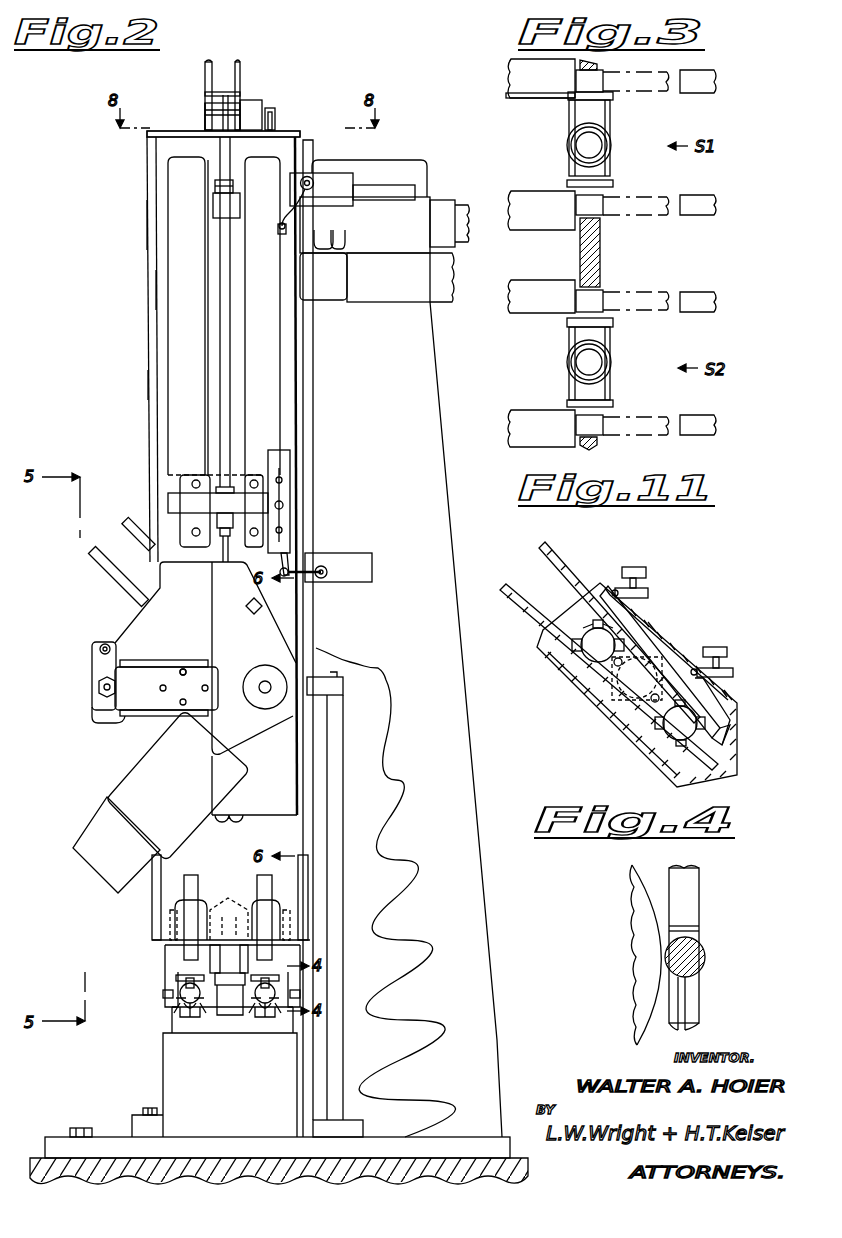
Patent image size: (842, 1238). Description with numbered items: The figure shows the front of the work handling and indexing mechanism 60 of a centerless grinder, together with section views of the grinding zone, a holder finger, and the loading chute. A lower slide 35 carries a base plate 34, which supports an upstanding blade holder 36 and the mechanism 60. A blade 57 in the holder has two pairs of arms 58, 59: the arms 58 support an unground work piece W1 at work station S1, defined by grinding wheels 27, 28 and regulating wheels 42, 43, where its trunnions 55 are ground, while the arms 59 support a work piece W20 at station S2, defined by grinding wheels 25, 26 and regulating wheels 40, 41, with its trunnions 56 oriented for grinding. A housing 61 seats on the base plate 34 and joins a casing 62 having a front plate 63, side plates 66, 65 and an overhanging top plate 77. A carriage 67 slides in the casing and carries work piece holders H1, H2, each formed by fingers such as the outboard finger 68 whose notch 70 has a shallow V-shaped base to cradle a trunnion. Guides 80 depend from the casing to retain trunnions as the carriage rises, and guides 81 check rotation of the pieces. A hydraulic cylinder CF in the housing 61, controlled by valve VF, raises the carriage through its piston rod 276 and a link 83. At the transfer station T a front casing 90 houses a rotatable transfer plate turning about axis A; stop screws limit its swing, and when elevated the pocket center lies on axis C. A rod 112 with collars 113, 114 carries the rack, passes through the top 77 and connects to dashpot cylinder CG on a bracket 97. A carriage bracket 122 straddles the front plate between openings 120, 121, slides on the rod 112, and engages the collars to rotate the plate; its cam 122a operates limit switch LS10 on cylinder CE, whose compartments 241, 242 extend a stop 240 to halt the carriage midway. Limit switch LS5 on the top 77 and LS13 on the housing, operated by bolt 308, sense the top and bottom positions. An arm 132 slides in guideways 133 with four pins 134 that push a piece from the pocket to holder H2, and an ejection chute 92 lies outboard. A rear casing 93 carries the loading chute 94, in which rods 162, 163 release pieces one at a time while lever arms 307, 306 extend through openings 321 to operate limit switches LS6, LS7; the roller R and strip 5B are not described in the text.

In FIG. 2, the work handling mechanism 60 is at (146, 172).
In FIG. 2, the casing 62 is at (146, 222).
In FIG. 2, the front plate 63 is at (163, 289).
In FIG. 2, the side plate 65 is at (303, 412).
In FIG. 2, the side plate 66 is at (149, 386).
In FIG. 2, the carriage 67 is at (185, 476).
In FIG. 2, the top plate 77 is at (290, 136).
In FIG. 2, the bracket 97 is at (206, 110).
In FIG. 2, the dashpot cylinder CG is at (241, 76).
In FIG. 2, the limit switch LS5 is at (255, 110).
In FIG. 2, the vertical elongated opening 120 is at (185, 165).
In FIG. 2, the vertical elongated opening 121 is at (270, 340).
In FIG. 2, the rod 112 is at (231, 375).
In FIG. 2, the collar 113 is at (240, 202).
In FIG. 2, the limit switch LS10 is at (332, 172).
In FIG. 2, the stop 240 is at (298, 224).
In FIG. 2, the compartment 241 is at (365, 248).
In FIG. 2, the valve VF is at (388, 277).
In FIG. 2, the cylinder CE is at (462, 212).
In FIG. 2, the compartment 242 is at (456, 240).
In FIG. 2, the carriage bracket 122 is at (187, 505).
In FIG. 2, the cam 122a is at (282, 465).
In FIG. 2, the collar 114 is at (222, 532).
In FIG. 2, the bolt 308 is at (290, 562).
In FIG. 2, the limit switch LS13 is at (372, 572).
In FIG. 2, the front casing 90 is at (206, 688).
In FIG. 2, the roller R is at (265, 684).
In FIG. 2, the axis C is at (186, 687).
In FIG. 2, the transfer station T is at (125, 630).
In FIG. 2, the arm 132 is at (166, 688).
In FIG. 2, the guideways 133 is at (147, 660).
In FIG. 2, the pins 134 is at (191, 665).
In FIG. 2, the ejection chute 92 is at (84, 866).
In FIG. 2, the link 83 is at (330, 668).
In FIG. 2, the housing 61 is at (478, 770).
In FIG. 2, the piston rod 276 is at (344, 686).
In FIG. 2, the hydraulic cylinder CF is at (344, 866).
In FIG. 2, the guides 80 is at (350, 936).
In FIG. 2, the guides 81 is at (260, 880).
In FIG. 2, the work piece holder H1 is at (300, 963).
In FIG. 3, the work piece holder H1 is at (580, 64).
In FIG. 4, the work piece holder H1 is at (700, 871).
In FIG. 2, the work piece holder H2 is at (165, 966).
In FIG. 3, the work piece holder H2 is at (600, 445).
In FIG. 2, the work piece W1 is at (276, 990).
In FIG. 3, the work piece W1 is at (609, 120).
In FIG. 11, the work piece W1 is at (722, 765).
In FIG. 4, the work piece W1 is at (706, 954).
In FIG. 2, the work piece W20 is at (180, 990).
In FIG. 3, the work piece W20 is at (609, 336).
In FIG. 2, the work station S1 is at (282, 1000).
In FIG. 2, the work station S2 is at (168, 1000).
In FIG. 2, the arms 59 is at (185, 1020).
In FIG. 2, the blade 57 is at (206, 1024).
In FIG. 2, the arms 58 is at (272, 1020).
In FIG. 2, the blade holder 36 is at (162, 1083).
In FIG. 2, the base plate 34 is at (54, 1135).
In FIG. 2, the lower slide 35 is at (279, 1171).
In FIG. 3, the grinding wheel 28 is at (520, 98).
In FIG. 4, the grinding wheel 28 is at (632, 883).
In FIG. 3, the grinding wheel 27 is at (545, 230).
In FIG. 3, the grinding wheel 26 is at (516, 314).
In FIG. 3, the grinding wheel 25 is at (512, 449).
In FIG. 3, the pair of trunnions 55 is at (596, 84).
In FIG. 3, the pair of trunnions 56 is at (594, 148).
In FIG. 3, the regulating wheel 43 is at (695, 96).
In FIG. 3, the regulating wheel 42 is at (695, 218).
In FIG. 3, the regulating wheel 41 is at (695, 315).
In FIG. 3, the regulating wheel 40 is at (697, 437).
In FIG. 11, the loading chute 94 is at (562, 556).
In FIG. 11, the rear casing 93 is at (612, 718).
In FIG. 11, the upper rod 163 is at (596, 690).
In FIG. 11, the lower rod 162 is at (655, 705).
In FIG. 11, the axis A is at (686, 728).
In FIG. 11, the limit switch LS6 is at (640, 567).
In FIG. 11, the limit switch LS7 is at (720, 647).
In FIG. 11, the lever arm 307 is at (640, 622).
In FIG. 11, the lever arm 306 is at (733, 673).
In FIG. 11, the openings 321 is at (656, 632).
In FIG. 4, the outboard depending finger 68 is at (700, 902).
In FIG. 4, the notch 70 is at (700, 930).
In FIG. 4, the strip 5B is at (690, 998).